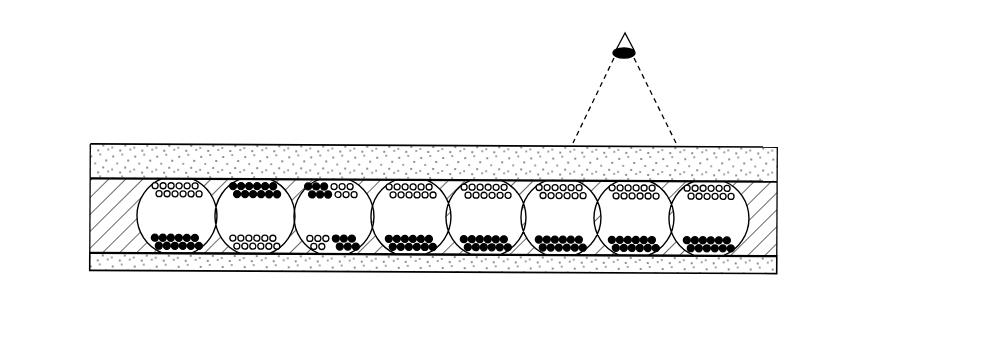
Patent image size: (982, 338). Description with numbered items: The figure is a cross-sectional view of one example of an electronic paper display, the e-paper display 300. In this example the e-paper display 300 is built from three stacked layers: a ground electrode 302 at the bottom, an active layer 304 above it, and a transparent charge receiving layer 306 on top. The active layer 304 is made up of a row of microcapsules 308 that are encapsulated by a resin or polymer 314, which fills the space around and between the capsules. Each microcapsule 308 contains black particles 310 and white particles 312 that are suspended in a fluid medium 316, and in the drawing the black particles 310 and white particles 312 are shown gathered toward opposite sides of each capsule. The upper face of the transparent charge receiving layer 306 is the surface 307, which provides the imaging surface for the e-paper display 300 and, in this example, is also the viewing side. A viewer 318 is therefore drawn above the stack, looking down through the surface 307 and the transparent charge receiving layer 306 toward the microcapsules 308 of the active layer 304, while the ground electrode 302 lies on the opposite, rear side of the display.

The e-paper display 300 is at (452, 90).
The ground electrode 302 is at (775, 268).
The active layer 304 is at (783, 183).
The transparent charge receiving layer 306 is at (775, 161).
The surface 307 is at (726, 146).
The microcapsules 308 is at (258, 179).
The black particles 310 is at (140, 242).
The white particles 312 is at (140, 194).
The resin or polymer 314 is at (103, 210).
The fluid medium 316 is at (297, 183).
The viewer 318 is at (632, 44).